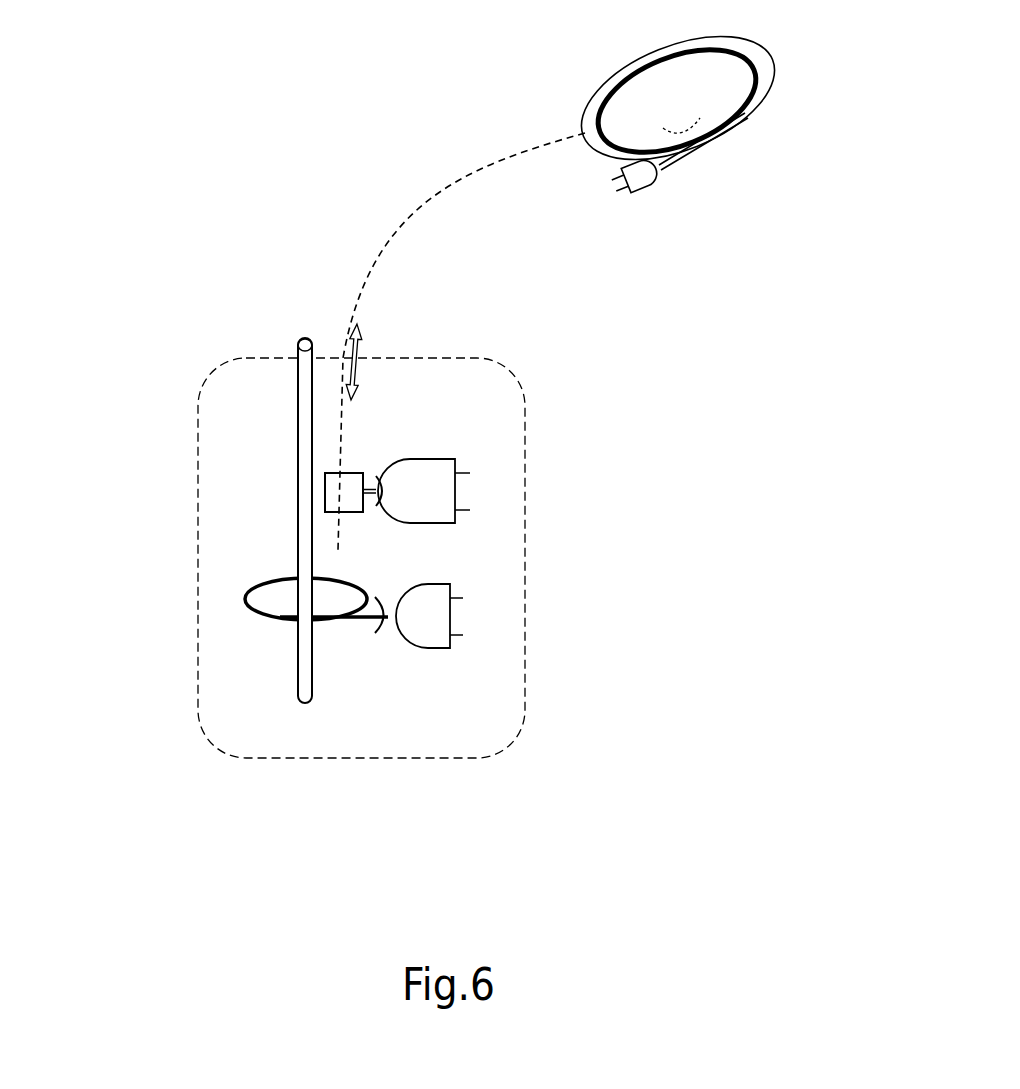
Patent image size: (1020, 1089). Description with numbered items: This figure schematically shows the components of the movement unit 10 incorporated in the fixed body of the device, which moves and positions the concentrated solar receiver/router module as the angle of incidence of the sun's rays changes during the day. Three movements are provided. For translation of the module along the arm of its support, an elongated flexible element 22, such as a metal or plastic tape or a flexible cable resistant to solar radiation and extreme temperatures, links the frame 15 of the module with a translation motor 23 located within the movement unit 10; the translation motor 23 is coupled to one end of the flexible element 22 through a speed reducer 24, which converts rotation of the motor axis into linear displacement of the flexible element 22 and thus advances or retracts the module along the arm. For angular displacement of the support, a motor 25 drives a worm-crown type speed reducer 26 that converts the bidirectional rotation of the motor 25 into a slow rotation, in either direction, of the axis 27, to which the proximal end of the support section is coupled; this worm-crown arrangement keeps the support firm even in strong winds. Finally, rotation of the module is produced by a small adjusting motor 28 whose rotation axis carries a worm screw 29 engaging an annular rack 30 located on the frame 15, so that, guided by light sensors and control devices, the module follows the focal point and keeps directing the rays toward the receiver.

The movement unit 10 is at (198, 518).
The frame 15 is at (662, 151).
The elongated flexible element 22 is at (423, 198).
The translation motor 23 is at (432, 458).
The speed reducer 24 is at (353, 473).
The motor 25 is at (432, 583).
The speed reducer 26 is at (333, 630).
The axis 27 is at (297, 452).
The adjusting motor 28 is at (643, 184).
The worm screw 29 is at (675, 162).
The annular rack 30 is at (755, 85).